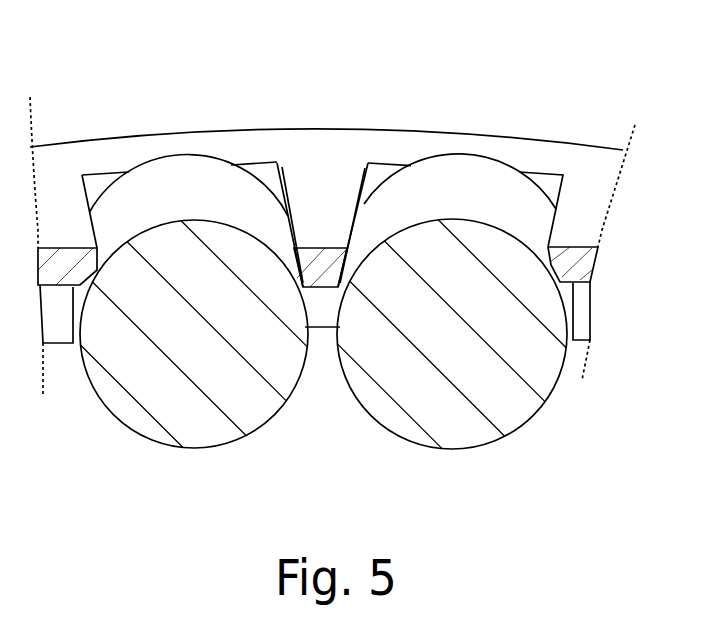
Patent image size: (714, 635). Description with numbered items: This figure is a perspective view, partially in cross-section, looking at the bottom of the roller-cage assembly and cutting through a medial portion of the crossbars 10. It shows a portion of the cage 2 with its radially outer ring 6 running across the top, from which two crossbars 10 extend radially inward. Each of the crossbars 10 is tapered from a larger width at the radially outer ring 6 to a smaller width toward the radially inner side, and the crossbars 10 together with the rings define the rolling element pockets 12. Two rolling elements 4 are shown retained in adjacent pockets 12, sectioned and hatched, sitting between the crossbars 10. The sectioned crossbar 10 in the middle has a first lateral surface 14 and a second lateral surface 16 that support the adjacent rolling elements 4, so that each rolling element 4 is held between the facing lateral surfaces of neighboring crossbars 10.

The cage 2 is at (97, 158).
The rolling elements 4 is at (243, 413).
The radially outer ring 6 is at (473, 147).
The crossbars 10 is at (318, 177).
The rolling element pockets 12 is at (257, 173).
The first lateral surface 14 is at (271, 173).
The second lateral surface 16 is at (362, 197).